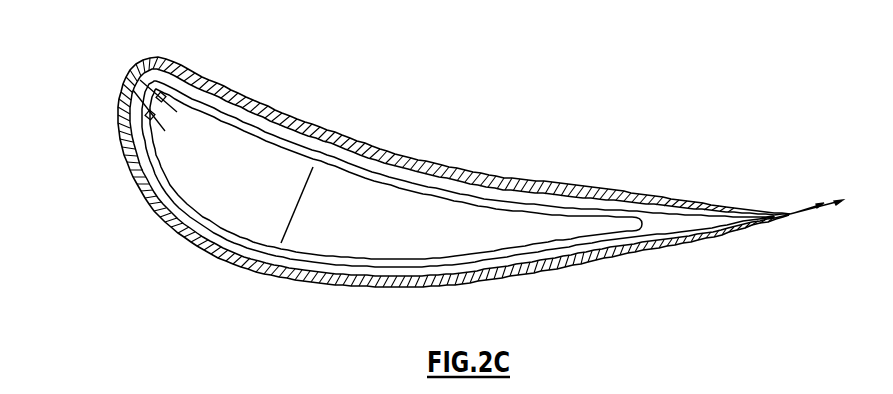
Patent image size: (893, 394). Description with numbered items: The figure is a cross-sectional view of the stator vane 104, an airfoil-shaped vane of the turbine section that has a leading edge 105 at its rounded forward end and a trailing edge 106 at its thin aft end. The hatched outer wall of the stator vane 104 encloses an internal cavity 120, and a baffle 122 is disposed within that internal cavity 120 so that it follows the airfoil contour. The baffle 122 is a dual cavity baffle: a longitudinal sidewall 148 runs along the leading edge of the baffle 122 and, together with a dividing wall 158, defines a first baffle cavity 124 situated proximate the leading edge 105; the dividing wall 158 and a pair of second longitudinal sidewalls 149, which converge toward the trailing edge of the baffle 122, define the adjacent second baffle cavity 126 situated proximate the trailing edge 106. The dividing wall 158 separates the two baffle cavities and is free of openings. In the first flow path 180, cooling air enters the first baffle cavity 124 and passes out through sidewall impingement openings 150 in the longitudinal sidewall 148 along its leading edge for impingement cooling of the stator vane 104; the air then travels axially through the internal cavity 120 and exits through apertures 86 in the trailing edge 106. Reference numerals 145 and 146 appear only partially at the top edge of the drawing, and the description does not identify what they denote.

The apertures 86 is at (760, 196).
The stator vane 104 is at (646, 108).
The leading edge 105 is at (139, 56).
The trailing edge 106 is at (799, 228).
The internal cavity 120 is at (283, 138).
The baffle 122 is at (374, 184).
The first baffle cavity 124 is at (237, 182).
The second baffle cavity 126 is at (426, 237).
The pressure side 145 is at (495, 0).
The suction side 146 is at (432, 0).
The longitudinal sidewall 148 is at (194, 97).
The second longitudinal sidewalls 149 is at (487, 202).
The sidewall impingement openings 150 is at (148, 111).
The dividing wall 158 is at (297, 213).
The first flow path 180 is at (670, 223).